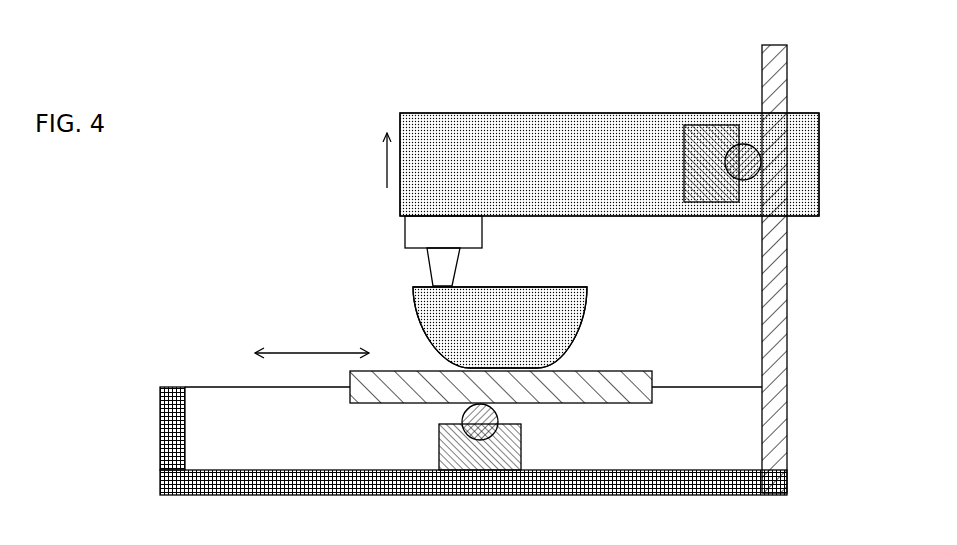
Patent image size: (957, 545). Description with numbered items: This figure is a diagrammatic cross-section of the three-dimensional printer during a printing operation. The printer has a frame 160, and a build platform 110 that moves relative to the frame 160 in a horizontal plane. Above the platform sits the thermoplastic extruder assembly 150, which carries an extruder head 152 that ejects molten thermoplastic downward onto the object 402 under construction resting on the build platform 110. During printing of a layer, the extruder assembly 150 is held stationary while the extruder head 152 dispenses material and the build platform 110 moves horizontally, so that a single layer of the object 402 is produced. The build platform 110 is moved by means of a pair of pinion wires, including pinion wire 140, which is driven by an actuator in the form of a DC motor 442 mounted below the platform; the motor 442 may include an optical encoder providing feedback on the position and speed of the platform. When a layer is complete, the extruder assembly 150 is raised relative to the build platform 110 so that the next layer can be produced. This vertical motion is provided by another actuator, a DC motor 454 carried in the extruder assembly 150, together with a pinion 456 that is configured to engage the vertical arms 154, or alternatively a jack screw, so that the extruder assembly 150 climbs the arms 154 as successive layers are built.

The build platform 110 is at (612, 368).
The pinion wire 140 is at (497, 412).
The extruder assembly 150 is at (588, 110).
The extruder head 152 is at (432, 270).
The arms 154 is at (789, 320).
The frame 160 is at (177, 383).
The object 402 is at (412, 320).
The DC motor 442 is at (439, 460).
The DC motor 454 is at (697, 123).
The pinion 456 is at (748, 145).